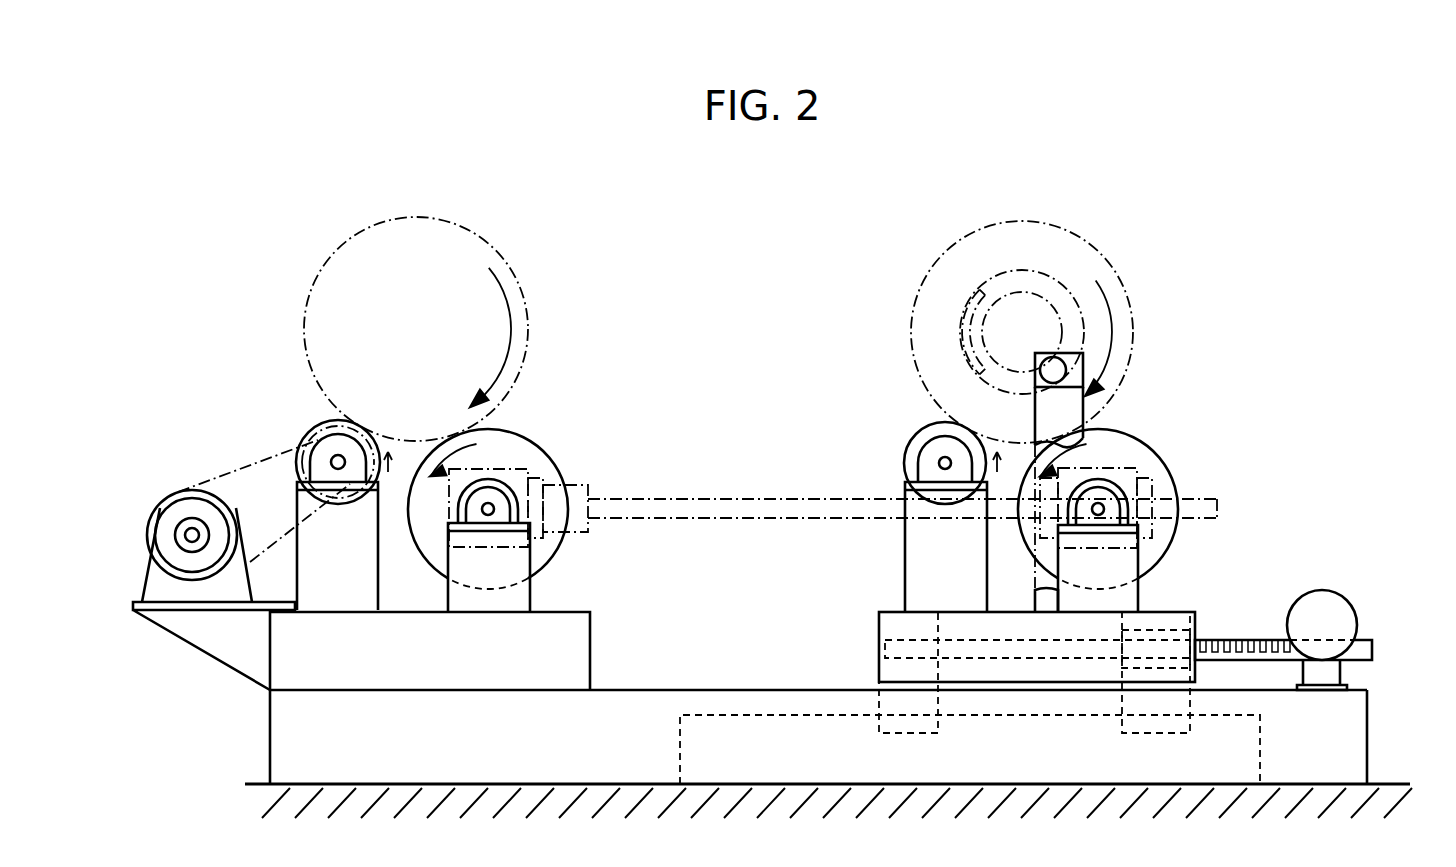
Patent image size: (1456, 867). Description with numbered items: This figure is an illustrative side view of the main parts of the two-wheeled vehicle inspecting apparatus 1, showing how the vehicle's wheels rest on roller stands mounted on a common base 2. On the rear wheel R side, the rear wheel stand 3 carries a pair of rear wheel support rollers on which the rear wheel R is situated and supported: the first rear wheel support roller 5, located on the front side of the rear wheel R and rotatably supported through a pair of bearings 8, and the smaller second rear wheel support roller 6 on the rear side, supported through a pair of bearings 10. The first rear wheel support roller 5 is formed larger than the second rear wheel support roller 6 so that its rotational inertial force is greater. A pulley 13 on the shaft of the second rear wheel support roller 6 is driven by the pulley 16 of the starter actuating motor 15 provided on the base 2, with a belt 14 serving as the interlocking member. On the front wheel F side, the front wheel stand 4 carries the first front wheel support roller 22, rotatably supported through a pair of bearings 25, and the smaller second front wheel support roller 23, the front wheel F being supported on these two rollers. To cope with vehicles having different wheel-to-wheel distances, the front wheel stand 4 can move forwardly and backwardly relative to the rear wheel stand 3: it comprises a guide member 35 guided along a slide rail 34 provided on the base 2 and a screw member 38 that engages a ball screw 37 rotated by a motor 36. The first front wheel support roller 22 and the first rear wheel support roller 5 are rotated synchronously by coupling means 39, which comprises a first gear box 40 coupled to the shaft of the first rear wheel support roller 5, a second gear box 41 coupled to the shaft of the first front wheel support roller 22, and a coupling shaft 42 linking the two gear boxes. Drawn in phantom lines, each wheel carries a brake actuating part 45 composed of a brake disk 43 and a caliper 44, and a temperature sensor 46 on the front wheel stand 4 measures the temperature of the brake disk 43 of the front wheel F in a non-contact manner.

The two-wheeled vehicle inspecting apparatus 1 is at (1292, 176).
The base 2 is at (1367, 748).
The rear wheel stand 3 is at (565, 645).
The front wheel stand 4 is at (880, 630).
The first rear wheel support roller 5 is at (545, 452).
The second rear wheel support roller 6 is at (315, 428).
The bearings 8 is at (495, 505).
The bearings 10 is at (354, 466).
The pulley 13 is at (305, 470).
The belt 14 is at (235, 465).
The starter actuating motor 15 is at (140, 598).
The pulley 16 is at (170, 500).
The first front wheel support roller 22 is at (1120, 447).
The second front wheel support roller 23 is at (915, 440).
The bearings 25 is at (1118, 500).
The slide rail 34 is at (1260, 750).
The guide member 35 is at (940, 734).
The motor 36 is at (1337, 617).
The ball screw 37 is at (940, 632).
The screw member 38 is at (1162, 630).
The coupling means 39 is at (696, 472).
The first gear box 40 is at (527, 460).
The second gear box 41 is at (1172, 455).
The coupling shaft 42 is at (752, 520).
The brake disk 43 is at (1045, 275).
The caliper 44 is at (952, 290).
The brake actuating part 45 is at (1000, 265).
The temperature sensor 46 is at (1085, 372).
The rear wheel R is at (508, 270).
The front wheel F is at (930, 280).